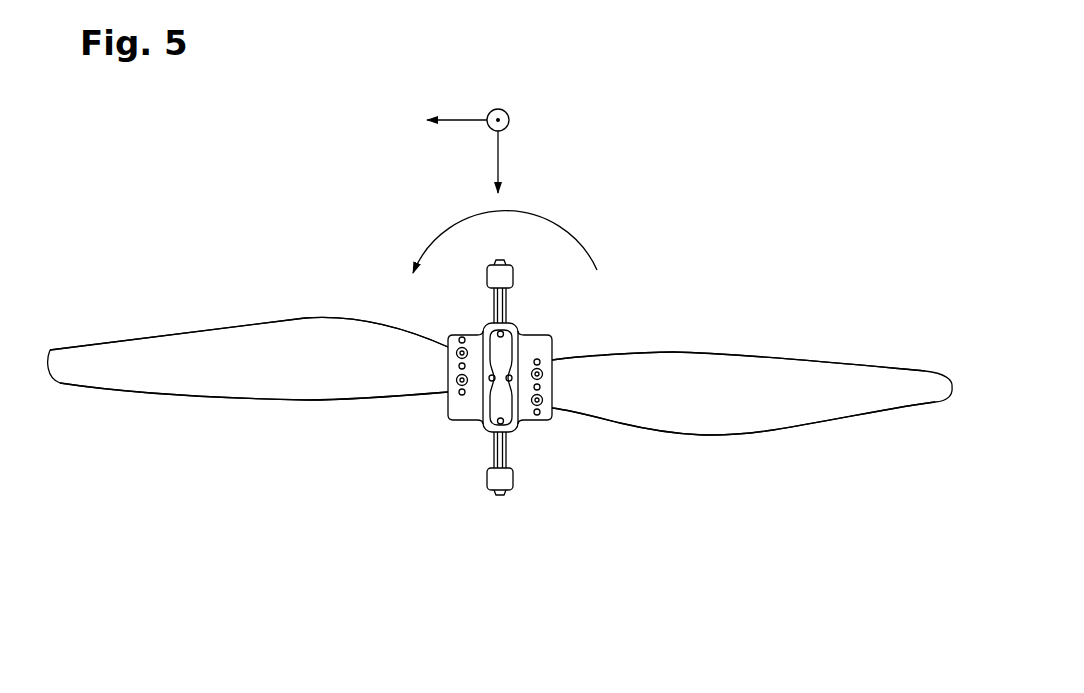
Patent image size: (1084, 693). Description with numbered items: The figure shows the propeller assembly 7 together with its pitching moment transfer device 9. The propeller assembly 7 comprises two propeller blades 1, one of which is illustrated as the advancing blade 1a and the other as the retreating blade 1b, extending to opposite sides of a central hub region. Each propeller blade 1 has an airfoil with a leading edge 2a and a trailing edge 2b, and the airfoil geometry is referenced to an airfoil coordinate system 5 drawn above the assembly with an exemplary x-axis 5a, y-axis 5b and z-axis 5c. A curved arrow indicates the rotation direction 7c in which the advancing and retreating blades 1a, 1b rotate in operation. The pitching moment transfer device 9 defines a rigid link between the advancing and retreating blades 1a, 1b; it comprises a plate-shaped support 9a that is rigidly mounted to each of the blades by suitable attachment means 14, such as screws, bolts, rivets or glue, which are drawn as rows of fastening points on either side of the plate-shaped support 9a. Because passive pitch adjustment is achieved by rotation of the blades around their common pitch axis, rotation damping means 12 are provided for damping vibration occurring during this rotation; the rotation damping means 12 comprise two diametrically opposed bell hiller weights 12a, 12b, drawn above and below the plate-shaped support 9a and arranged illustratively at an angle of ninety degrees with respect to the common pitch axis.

The propeller blade 1 is at (500, 354).
The advancing blade 1a is at (690, 418).
The retreating blade 1b is at (185, 345).
The leading edge 2a is at (162, 397).
The trailing edge 2b is at (266, 320).
The airfoil coordinate system 5 is at (508, 119).
The x-axis 5a is at (497, 155).
The y-axis 5b is at (460, 119).
The z-axis 5c is at (503, 125).
The propeller assembly 7 is at (708, 275).
The rotation direction 7c is at (562, 232).
The pitching moment transfer device 9 is at (494, 394).
The plate-shaped support 9a is at (460, 403).
The rotation damping means 12 is at (541, 417).
The bell hiller weight 12a is at (505, 276).
The bell hiller weight 12b is at (503, 479).
The attachment means 14 is at (444, 383).